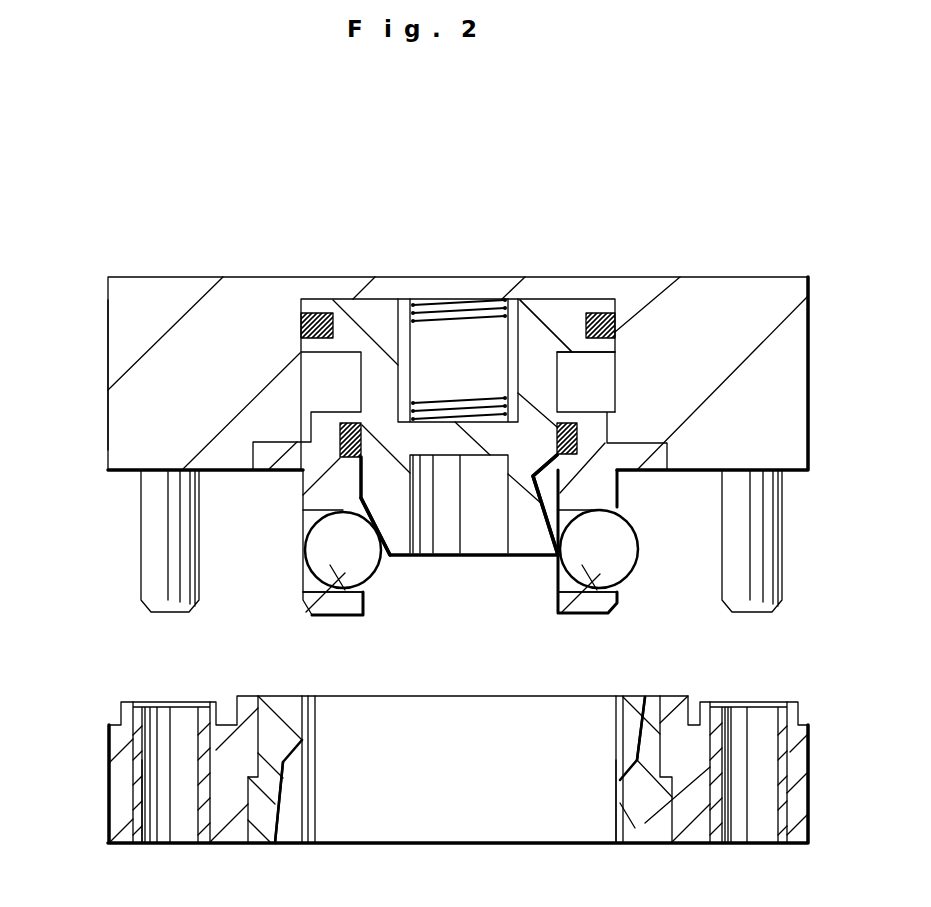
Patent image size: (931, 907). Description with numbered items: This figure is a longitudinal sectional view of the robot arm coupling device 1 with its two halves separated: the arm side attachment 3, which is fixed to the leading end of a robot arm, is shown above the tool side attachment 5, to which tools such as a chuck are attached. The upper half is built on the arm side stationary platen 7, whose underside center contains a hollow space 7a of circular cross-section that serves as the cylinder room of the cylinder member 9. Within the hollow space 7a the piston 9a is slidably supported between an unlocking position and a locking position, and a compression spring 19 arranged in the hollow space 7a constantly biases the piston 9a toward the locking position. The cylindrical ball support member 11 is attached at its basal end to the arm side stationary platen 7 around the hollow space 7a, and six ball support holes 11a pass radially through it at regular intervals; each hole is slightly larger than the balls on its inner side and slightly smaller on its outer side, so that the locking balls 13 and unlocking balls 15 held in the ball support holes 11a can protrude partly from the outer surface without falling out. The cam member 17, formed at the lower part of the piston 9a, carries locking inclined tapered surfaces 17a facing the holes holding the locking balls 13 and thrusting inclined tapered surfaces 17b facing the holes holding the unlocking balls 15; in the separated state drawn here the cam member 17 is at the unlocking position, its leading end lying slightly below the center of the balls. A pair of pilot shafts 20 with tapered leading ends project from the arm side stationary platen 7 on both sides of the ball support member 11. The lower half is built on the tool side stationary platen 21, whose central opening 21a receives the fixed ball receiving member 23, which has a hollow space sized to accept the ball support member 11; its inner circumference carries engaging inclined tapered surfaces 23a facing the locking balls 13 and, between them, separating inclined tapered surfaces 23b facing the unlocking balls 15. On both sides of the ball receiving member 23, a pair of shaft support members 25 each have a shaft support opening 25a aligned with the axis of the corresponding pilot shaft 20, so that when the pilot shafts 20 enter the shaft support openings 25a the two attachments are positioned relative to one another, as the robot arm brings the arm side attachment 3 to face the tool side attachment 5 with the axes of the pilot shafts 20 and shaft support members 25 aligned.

The robot arm coupling device 1 is at (644, 230).
The arm side attachment 3 is at (131, 268).
The tool side attachment 5 is at (106, 757).
The arm side stationary platen 7 is at (140, 390).
The hollow space 7a is at (617, 370).
The cylinder member 9 is at (352, 294).
The piston 9a is at (550, 327).
The ball support member 11 is at (303, 497).
The ball support hole 11a is at (333, 571).
The locking ball 13 is at (323, 548).
The unlocking ball 15 is at (590, 553).
The cam member 17 is at (473, 560).
The locking inclined tapered surface 17a is at (374, 539).
The thrusting inclined tapered surface 17b is at (549, 497).
The compression spring 19 is at (449, 305).
The pilot shaft 20 is at (168, 545).
The tool side stationary platen 21 is at (120, 790).
The opening 21a is at (637, 828).
The ball receiving member 23 is at (261, 845).
The engaging inclined tapered surface 23a is at (293, 799).
The separating inclined tapered surface 23b is at (633, 730).
The shaft support member 25 is at (128, 703).
The shaft support opening 25a is at (131, 777).